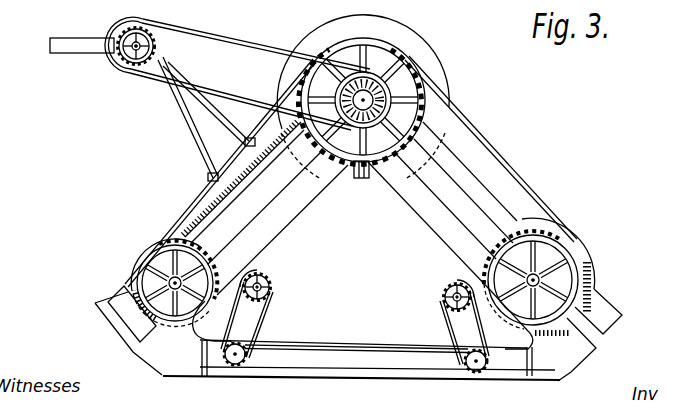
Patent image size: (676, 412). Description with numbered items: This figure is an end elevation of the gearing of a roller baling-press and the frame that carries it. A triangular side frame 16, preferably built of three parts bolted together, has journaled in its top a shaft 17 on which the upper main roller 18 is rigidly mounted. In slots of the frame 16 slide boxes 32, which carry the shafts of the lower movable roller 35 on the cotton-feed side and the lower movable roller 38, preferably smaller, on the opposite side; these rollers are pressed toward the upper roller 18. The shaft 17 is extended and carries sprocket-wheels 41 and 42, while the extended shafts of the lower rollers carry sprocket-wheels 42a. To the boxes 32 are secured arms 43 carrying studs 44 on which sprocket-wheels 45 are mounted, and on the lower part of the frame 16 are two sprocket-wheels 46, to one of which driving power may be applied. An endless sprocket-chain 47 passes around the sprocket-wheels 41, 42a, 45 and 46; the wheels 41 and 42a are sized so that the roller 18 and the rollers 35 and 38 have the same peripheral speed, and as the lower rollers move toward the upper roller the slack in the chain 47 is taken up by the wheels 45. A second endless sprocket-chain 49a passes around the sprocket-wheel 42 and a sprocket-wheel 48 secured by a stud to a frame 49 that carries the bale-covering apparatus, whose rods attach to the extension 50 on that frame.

The triangular side frame 16 is at (309, 205).
The shaft 17 is at (365, 97).
The upper main roller 18 is at (404, 29).
The box 32 is at (134, 329).
The lower movable roller 35 is at (583, 252).
The lower movable roller 38 is at (142, 250).
The sprocket-wheel 41 is at (364, 40).
The sprocket-wheel 42 is at (357, 118).
The sprocket-wheel 42a is at (205, 248).
The arm 43 is at (231, 300).
The stud 44 is at (271, 286).
The sprocket-wheel 45 is at (264, 274).
The sprocket-wheel 46 is at (253, 348).
The endless sprocket-chain 47 is at (483, 143).
The sprocket-wheel 48 is at (156, 46).
The frame 49 is at (173, 108).
The endless sprocket-chain 49a is at (264, 44).
The extension 50 is at (88, 48).